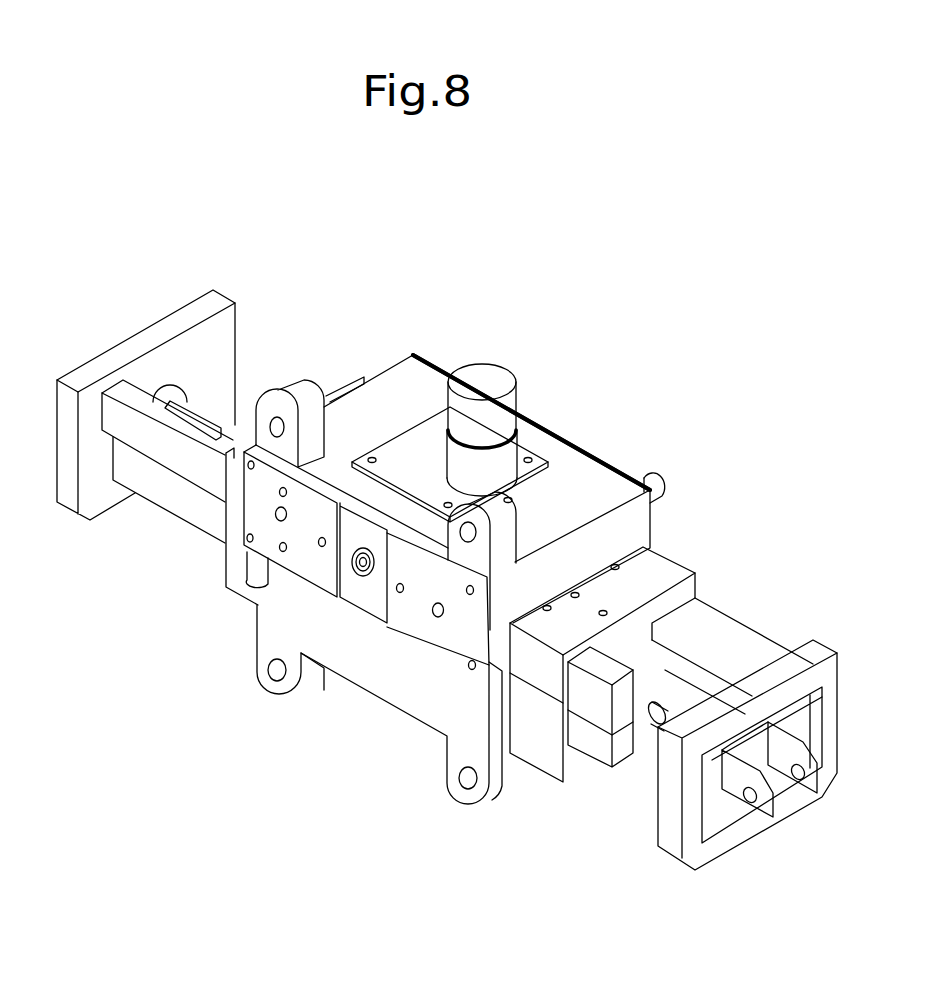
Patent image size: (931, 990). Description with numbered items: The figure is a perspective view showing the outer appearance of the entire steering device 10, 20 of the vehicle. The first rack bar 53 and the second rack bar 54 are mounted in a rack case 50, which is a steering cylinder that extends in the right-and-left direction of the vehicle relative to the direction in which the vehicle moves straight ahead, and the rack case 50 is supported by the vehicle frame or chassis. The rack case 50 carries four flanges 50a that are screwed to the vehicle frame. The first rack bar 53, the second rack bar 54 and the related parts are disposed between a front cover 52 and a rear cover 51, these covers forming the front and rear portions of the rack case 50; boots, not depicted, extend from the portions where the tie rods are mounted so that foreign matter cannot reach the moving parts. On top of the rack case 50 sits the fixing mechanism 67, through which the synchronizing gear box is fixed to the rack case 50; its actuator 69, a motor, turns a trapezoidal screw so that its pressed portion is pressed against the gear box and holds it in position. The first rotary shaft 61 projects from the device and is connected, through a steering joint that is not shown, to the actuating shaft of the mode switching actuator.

The steering device 10 is at (602, 367).
The steering device 20 is at (531, 422).
The rack case 50 is at (353, 710).
The flange 50a is at (277, 417).
The rear cover 51 is at (578, 472).
The front cover 52 is at (435, 713).
The first rack bar 53 is at (727, 635).
The second rack bar 54 is at (163, 455).
The first rotary shaft 61 is at (660, 486).
The fixing mechanism 67 is at (512, 357).
The actuator 69 is at (473, 382).